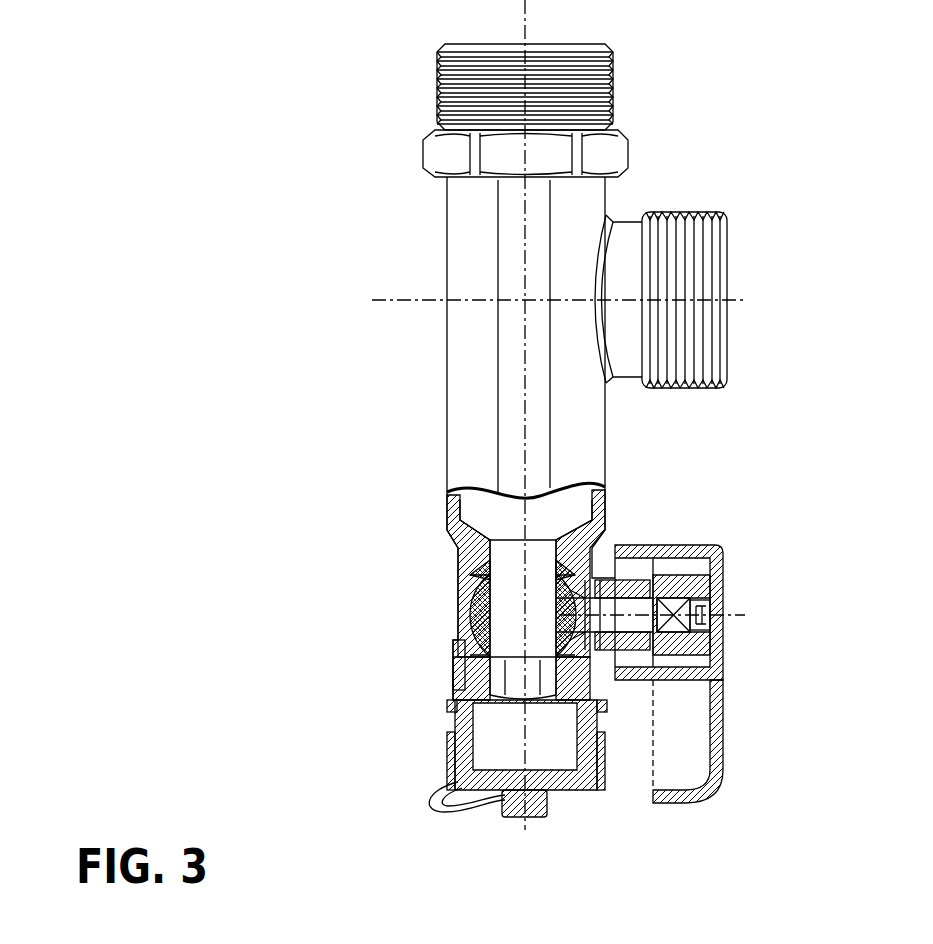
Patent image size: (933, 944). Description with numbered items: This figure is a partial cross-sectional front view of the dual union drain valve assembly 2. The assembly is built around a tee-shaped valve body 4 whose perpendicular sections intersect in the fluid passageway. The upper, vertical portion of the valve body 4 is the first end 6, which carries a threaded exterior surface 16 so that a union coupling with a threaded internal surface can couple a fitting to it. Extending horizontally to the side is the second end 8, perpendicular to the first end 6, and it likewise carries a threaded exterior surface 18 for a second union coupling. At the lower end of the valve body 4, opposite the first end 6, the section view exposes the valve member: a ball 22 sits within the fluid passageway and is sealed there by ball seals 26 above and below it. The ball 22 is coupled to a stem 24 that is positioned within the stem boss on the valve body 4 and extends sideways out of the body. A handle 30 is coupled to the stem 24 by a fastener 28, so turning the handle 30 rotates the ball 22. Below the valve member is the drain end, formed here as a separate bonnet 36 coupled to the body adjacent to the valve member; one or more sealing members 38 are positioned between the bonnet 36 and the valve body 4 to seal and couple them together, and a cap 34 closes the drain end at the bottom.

The dual union drain valve assembly 2 is at (728, 120).
The valve body 4 is at (470, 385).
The first end 6 is at (590, 200).
The second end 8 is at (625, 242).
The threaded exterior surface 16 is at (440, 100).
The threaded exterior surface 18 is at (687, 377).
The ball 22 is at (477, 612).
The stem 24 is at (632, 587).
The ball seals 26 is at (477, 573).
The fastener 28 is at (712, 622).
The handle 30 is at (715, 582).
The cap 34 is at (578, 793).
The bonnet 36 is at (455, 688).
The sealing members 38 is at (458, 667).